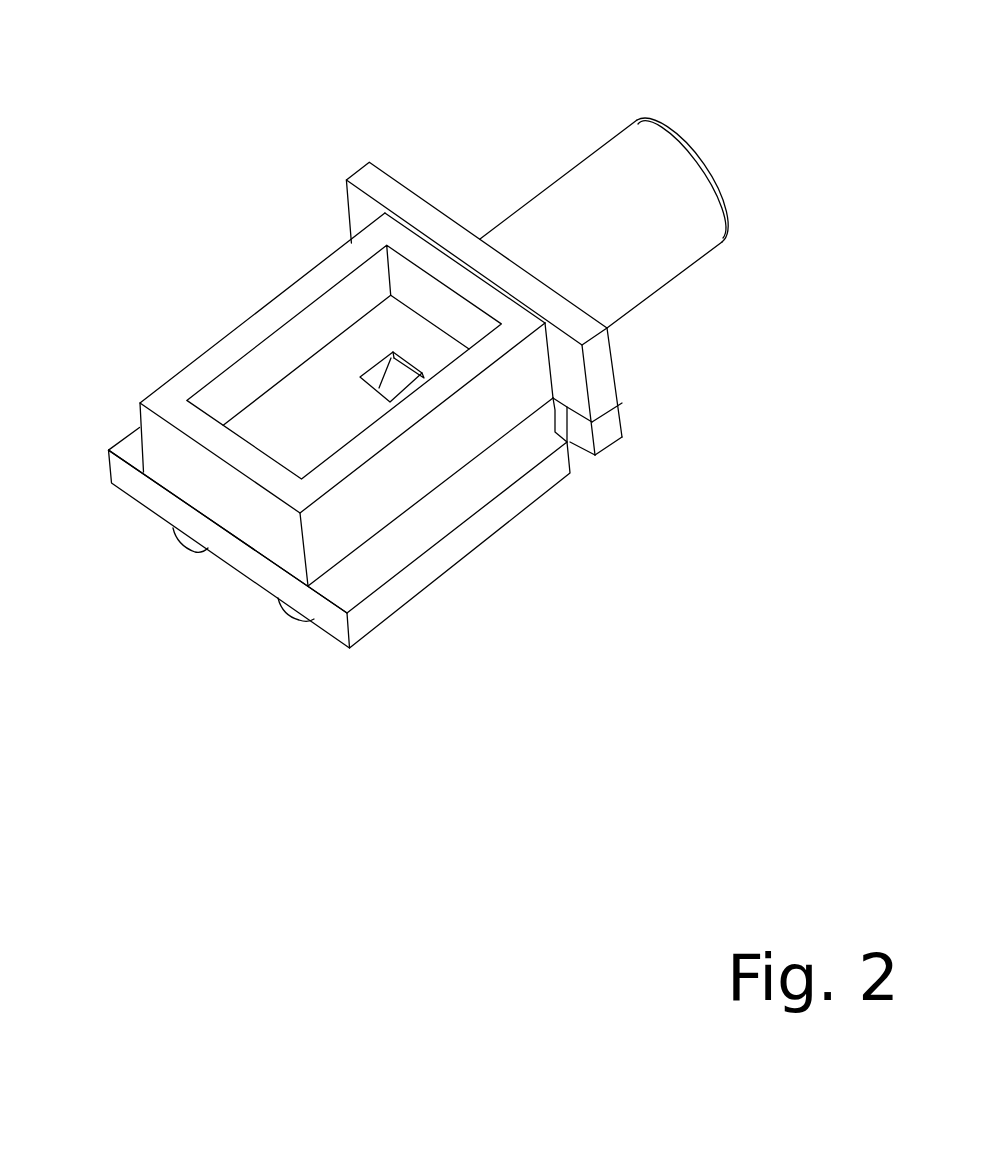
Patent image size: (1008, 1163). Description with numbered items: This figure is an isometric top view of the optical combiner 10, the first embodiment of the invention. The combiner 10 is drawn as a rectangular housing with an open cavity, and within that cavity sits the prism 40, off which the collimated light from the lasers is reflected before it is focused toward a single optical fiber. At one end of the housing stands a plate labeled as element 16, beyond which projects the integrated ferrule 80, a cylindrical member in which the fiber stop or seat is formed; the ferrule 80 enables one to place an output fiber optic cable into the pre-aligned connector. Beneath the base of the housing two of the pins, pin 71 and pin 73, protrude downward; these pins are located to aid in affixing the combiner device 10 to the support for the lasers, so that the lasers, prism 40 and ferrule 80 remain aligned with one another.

The optical combiner 10 is at (324, 116).
The flange 16 is at (575, 322).
The prism 40 is at (398, 380).
The pin 71 is at (305, 632).
The pin 73 is at (200, 553).
The ferrule 80 is at (600, 175).